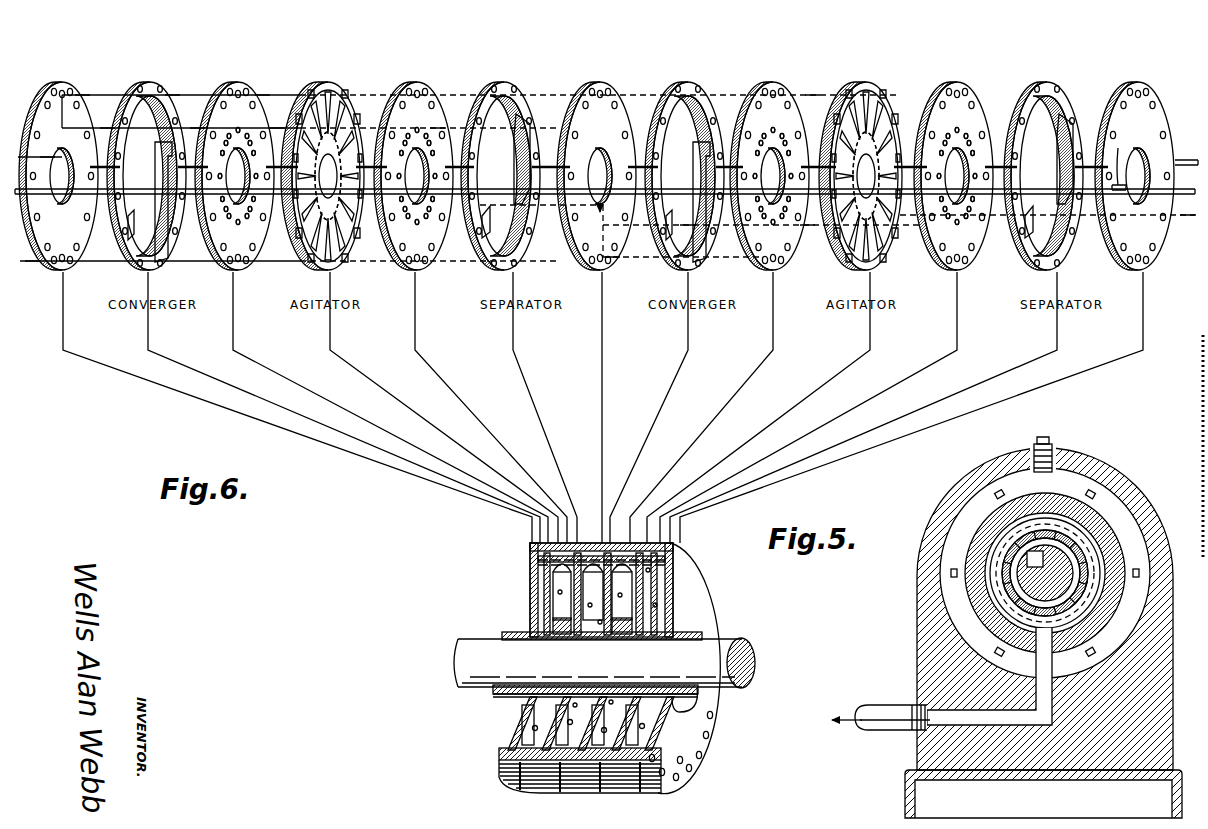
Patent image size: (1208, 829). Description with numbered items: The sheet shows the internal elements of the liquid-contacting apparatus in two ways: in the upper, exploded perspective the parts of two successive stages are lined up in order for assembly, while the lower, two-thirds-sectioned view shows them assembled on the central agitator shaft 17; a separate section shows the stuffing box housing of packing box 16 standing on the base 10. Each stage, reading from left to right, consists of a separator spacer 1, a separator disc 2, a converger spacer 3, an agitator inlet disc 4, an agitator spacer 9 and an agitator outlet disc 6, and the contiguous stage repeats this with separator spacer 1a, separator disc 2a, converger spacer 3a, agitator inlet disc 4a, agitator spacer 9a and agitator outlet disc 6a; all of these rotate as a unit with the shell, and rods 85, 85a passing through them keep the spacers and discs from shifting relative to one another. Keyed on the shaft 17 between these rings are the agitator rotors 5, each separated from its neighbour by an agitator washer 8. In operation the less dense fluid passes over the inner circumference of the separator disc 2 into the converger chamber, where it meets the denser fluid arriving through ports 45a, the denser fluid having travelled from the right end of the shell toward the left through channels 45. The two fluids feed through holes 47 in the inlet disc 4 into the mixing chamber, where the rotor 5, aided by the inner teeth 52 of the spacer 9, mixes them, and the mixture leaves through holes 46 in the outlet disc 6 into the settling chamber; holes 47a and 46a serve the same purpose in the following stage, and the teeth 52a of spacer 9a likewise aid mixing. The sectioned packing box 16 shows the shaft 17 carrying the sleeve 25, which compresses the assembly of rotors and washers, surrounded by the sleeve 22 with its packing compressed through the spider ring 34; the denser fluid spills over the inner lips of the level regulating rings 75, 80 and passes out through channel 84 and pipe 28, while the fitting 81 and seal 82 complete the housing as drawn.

In FIG. 6, the separator spacer 1 is at (1048, 85).
In FIG. 6, the separator spacer 1a is at (496, 85).
In FIG. 6, the separator disc 2 is at (58, 85).
In FIG. 6, the separator disc 2a is at (596, 85).
In FIG. 6, the converger spacer 3 is at (146, 86).
In FIG. 6, the converger spacer 3a is at (688, 85).
In FIG. 6, the agitator inlet disc 4 is at (246, 86).
In FIG. 6, the agitator inlet disc 4a is at (772, 85).
In FIG. 6, the agitator rotor 5 is at (543, 338).
In FIG. 6, the agitator outlet disc 6 is at (416, 86).
In FIG. 6, the agitator outlet disc 6a is at (957, 85).
In FIG. 6, the agitator washer 8 is at (508, 632).
In FIG. 6, the agitator spacer 9 is at (318, 85).
In FIG. 6, the agitator spacer 9a is at (864, 85).
In FIG. 5, the base 10 is at (905, 802).
In FIG. 5, the packing box 16 is at (985, 466).
In FIG. 6, the agitator shaft 17 is at (748, 648).
In FIG. 5, the agitator shaft 17 is at (1036, 562).
In FIG. 5, the sleeve 22 is at (976, 506).
In FIG. 5, the sleeve 25 is at (1022, 590).
In FIG. 5, the pipe 28 is at (953, 722).
In FIG. 5, the spider ring 34 is at (1100, 497).
In FIG. 6, the channels 45 is at (573, 514).
In FIG. 6, the ports 45a is at (615, 306).
In FIG. 6, the holes 46 is at (402, 218).
In FIG. 6, the holes 46a is at (942, 216).
In FIG. 6, the holes 47 is at (228, 222).
In FIG. 6, the holes 47a is at (765, 222).
In FIG. 6, the inner teeth 52 is at (338, 228).
In FIG. 6, the agitator core 52a is at (846, 122).
In FIG. 5, the level regulating ring 75 is at (993, 598).
In FIG. 5, the level regulating ring 80 is at (1088, 540).
In FIG. 5, the grease fitting 81 is at (1052, 444).
In FIG. 5, the seal 82 is at (1040, 556).
In FIG. 5, the channel 84 is at (1040, 640).
In FIG. 6, the rod 85 is at (1120, 183).
In FIG. 6, the rod 85a is at (1184, 155).